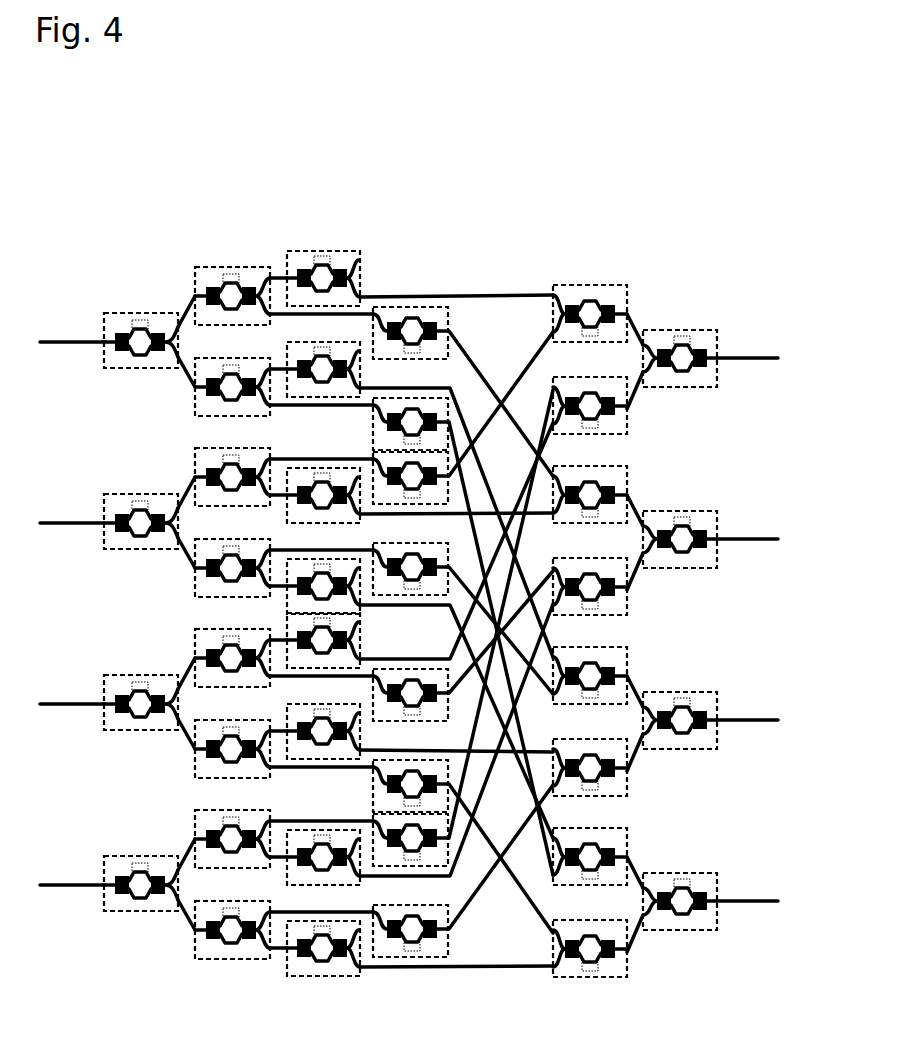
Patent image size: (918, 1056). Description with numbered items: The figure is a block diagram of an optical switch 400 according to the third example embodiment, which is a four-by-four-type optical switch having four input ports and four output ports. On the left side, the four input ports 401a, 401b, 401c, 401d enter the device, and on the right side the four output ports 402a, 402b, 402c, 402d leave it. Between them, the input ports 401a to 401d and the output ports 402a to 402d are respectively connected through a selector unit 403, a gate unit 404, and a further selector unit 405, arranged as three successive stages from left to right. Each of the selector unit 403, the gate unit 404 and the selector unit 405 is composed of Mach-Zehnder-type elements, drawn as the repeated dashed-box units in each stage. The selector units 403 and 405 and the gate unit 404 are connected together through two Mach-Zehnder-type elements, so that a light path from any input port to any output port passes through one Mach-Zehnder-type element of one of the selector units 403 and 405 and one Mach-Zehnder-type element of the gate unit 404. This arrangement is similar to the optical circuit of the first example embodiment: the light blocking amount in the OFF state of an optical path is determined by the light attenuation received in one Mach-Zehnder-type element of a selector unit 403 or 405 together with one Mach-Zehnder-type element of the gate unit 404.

The optical switch 400 is at (545, 147).
The input port 401a is at (64, 338).
The input port 401b is at (64, 519).
The input port 401c is at (64, 700).
The input port 401d is at (64, 881).
The output port 402a is at (753, 355).
The output port 402b is at (753, 536).
The output port 402c is at (753, 717).
The output port 402d is at (753, 898).
The selector unit 403 is at (265, 233).
The gate unit 404 is at (448, 233).
The selector unit 405 is at (722, 233).